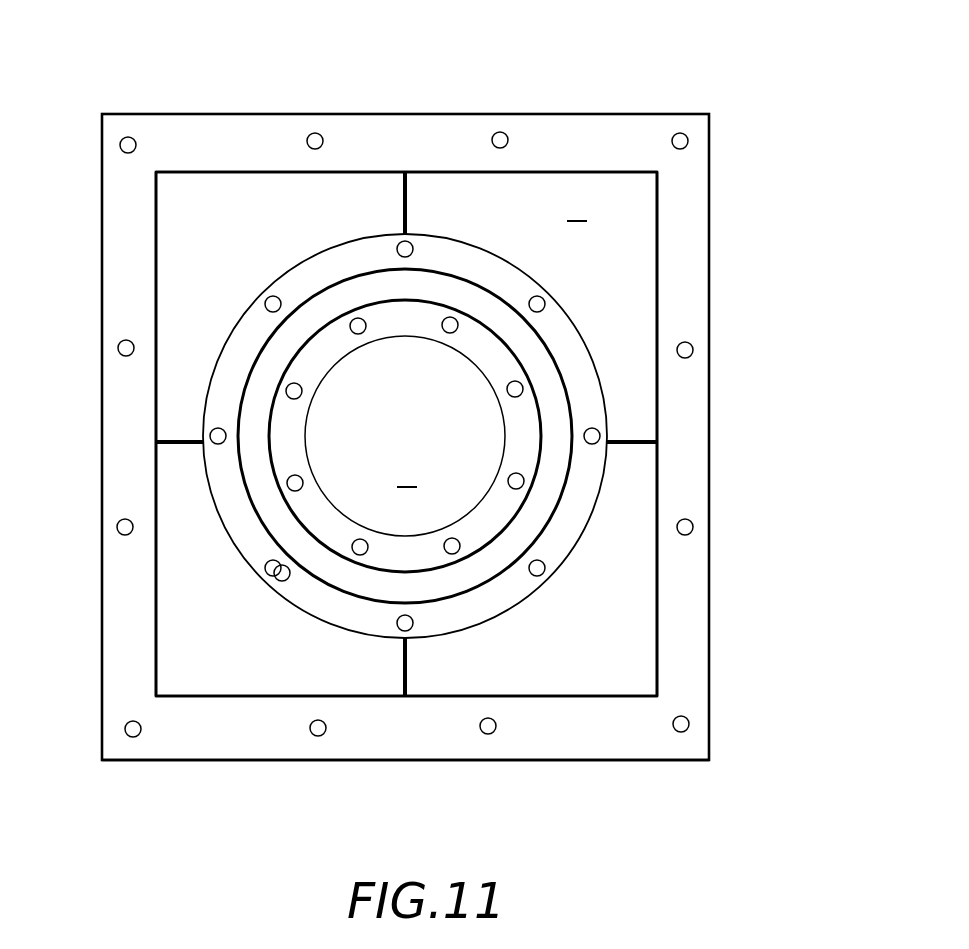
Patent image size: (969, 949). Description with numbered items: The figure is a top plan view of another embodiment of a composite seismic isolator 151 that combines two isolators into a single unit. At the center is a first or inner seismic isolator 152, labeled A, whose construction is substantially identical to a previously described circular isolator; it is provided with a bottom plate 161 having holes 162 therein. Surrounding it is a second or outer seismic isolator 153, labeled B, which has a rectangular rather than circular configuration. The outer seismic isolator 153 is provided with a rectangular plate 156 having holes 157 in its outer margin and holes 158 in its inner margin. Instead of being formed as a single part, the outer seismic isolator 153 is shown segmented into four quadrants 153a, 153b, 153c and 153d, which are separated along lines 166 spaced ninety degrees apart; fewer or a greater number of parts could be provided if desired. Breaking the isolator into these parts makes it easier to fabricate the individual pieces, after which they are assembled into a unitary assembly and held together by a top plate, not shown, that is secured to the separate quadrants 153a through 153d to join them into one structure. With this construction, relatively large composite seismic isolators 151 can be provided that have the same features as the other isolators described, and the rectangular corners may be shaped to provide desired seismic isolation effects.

The composite seismic isolator 151 is at (83, 90).
The first or inner seismic isolator 152 is at (470, 455).
The second or outer seismic isolator 153 is at (615, 235).
The quadrant of outer seismic isolator 153a is at (540, 678).
The quadrant of outer seismic isolator 153b is at (635, 283).
The quadrant of outer seismic isolator 153c is at (177, 293).
The quadrant of outer seismic isolator 153d is at (173, 618).
The rectangular plate 156 is at (267, 745).
The holes 157 is at (120, 536).
The holes 158 is at (278, 580).
The bottom plate 161 is at (503, 513).
The holes 162 is at (452, 554).
The lines 166 is at (405, 172).